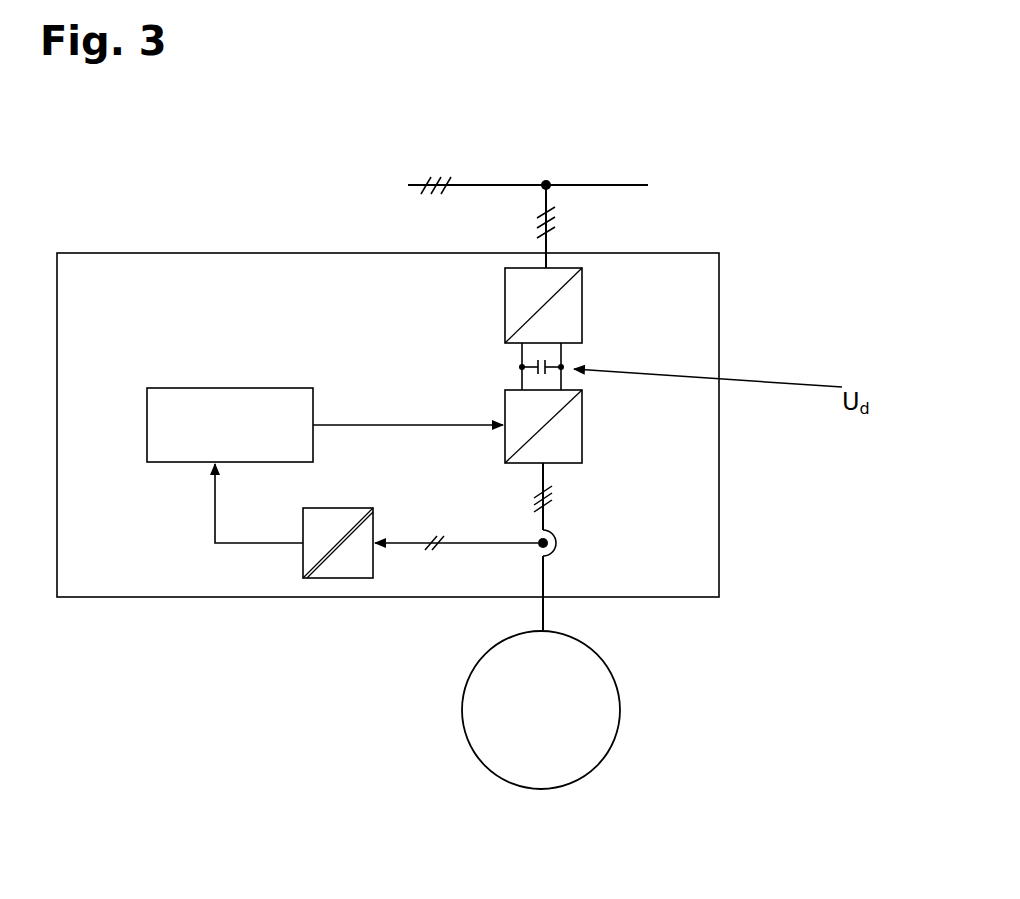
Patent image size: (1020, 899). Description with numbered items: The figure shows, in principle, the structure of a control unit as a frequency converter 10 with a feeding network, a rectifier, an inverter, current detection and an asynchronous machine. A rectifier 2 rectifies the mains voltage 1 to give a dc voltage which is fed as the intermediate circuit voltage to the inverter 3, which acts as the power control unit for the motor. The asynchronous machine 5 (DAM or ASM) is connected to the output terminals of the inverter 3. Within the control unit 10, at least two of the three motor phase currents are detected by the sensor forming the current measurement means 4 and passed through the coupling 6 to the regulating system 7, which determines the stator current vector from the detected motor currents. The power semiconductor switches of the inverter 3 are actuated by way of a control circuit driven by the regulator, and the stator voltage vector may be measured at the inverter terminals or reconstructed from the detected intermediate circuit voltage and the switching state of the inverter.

The mains voltage 1 is at (528, 203).
The rectifier 2 is at (570, 329).
The inverter 3 is at (574, 460).
The current measurement means 4 is at (572, 578).
The asynchronous machine 5 is at (560, 710).
The coupling 6 is at (420, 527).
The regulating system 7 is at (325, 465).
The control unit 10 is at (388, 425).